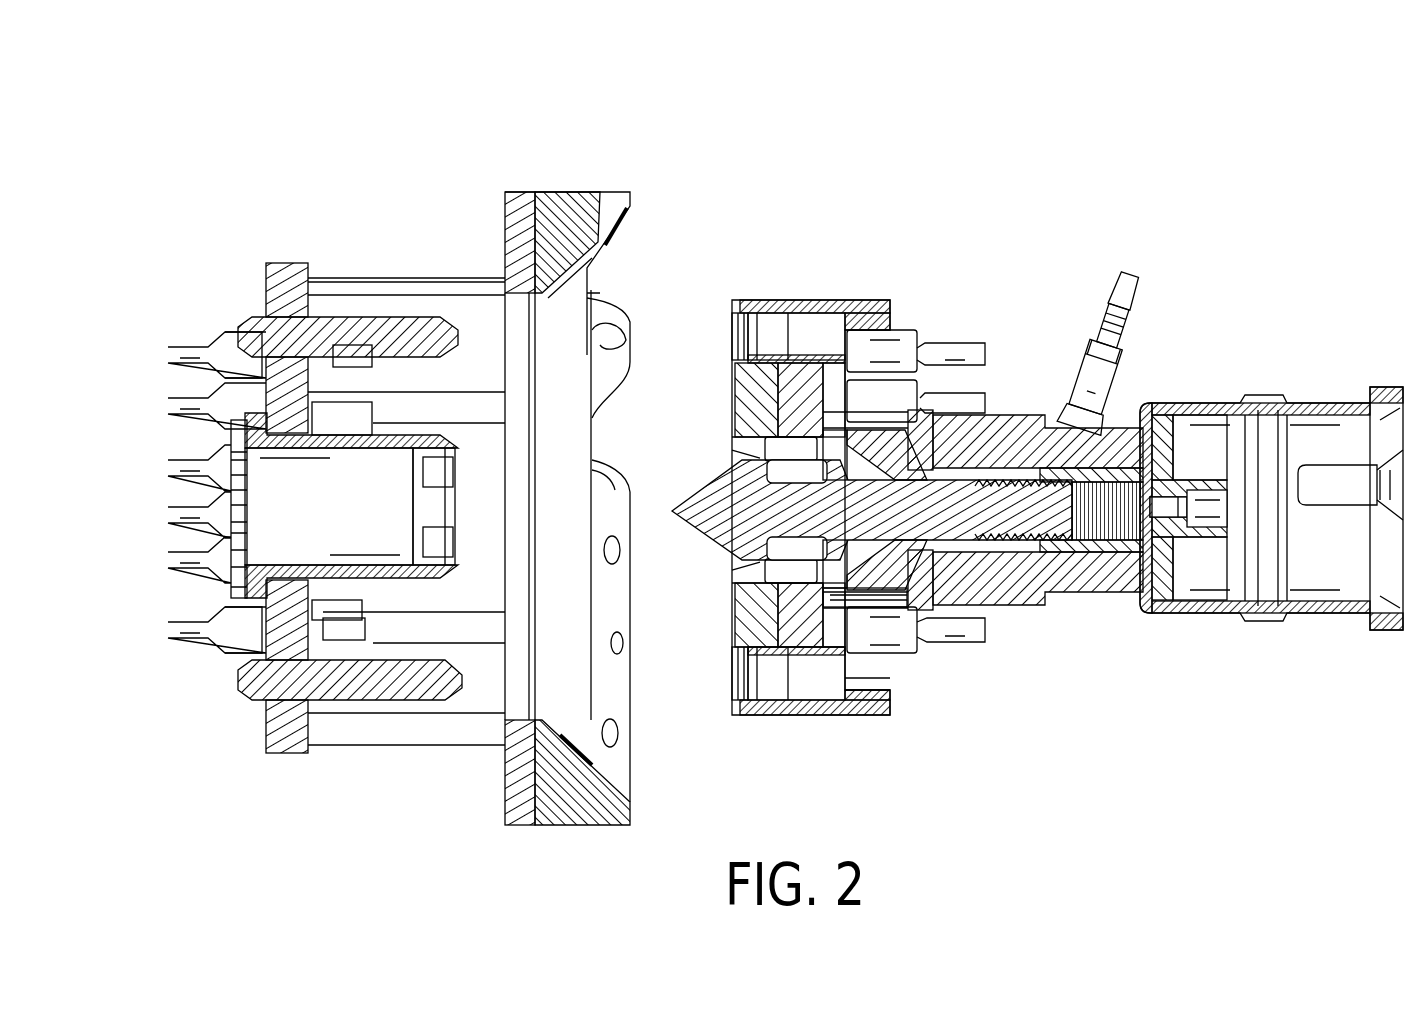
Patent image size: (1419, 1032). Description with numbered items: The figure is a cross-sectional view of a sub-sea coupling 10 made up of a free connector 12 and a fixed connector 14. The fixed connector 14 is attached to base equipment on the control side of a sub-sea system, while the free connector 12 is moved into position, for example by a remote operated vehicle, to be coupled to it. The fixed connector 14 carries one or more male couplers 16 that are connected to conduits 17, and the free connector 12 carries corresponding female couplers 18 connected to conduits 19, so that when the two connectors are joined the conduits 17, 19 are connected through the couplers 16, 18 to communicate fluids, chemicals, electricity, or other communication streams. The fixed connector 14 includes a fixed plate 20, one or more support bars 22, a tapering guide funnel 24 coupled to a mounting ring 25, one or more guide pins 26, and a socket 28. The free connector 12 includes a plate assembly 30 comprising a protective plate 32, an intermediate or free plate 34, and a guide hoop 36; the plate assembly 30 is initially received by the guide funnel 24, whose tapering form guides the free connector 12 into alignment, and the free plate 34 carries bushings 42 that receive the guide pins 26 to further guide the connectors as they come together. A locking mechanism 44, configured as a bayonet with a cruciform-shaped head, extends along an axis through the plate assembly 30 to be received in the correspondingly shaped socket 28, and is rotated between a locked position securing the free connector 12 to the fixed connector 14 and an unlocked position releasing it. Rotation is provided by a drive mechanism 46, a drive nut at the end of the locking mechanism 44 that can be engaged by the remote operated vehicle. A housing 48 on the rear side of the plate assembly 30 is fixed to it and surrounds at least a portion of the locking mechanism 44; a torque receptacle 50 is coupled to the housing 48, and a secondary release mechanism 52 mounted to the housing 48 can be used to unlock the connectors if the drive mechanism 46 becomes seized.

The sub-sea coupling 10 is at (360, 99).
The free connector 12 is at (1074, 231).
The fixed connector 14 is at (378, 200).
The couplers 16 is at (232, 340).
The conduits 17 is at (178, 352).
The couplers 18 is at (860, 350).
The conduits 19 is at (968, 350).
The fixed plate 20 is at (302, 265).
The support bars 22 is at (358, 300).
The guide funnel 24 is at (580, 192).
The mounting ring 25 is at (527, 192).
The guide pins 26 is at (405, 335).
The socket 28 is at (296, 528).
The plate assembly 30 is at (818, 268).
The protective plate 32 is at (762, 300).
The intermediate plate 34 is at (795, 303).
The guide hoop 36 is at (858, 302).
The bushings 42 is at (735, 335).
The locking mechanism 44 is at (722, 549).
The drive mechanism 46 is at (1210, 530).
The housing 48 is at (1002, 428).
The torque receptacle 50 is at (1305, 405).
The secondary release mechanism 52 is at (1105, 378).